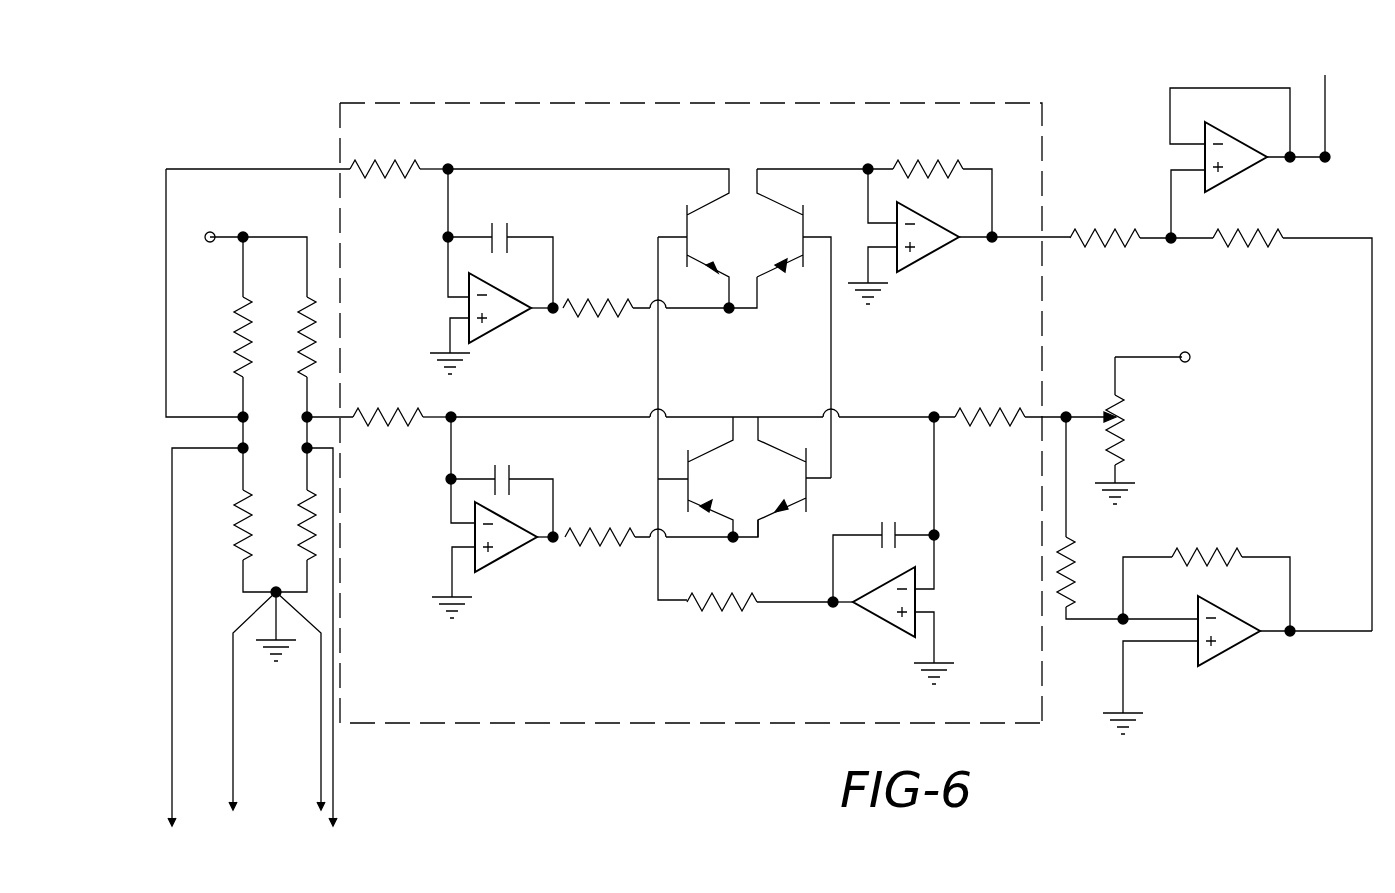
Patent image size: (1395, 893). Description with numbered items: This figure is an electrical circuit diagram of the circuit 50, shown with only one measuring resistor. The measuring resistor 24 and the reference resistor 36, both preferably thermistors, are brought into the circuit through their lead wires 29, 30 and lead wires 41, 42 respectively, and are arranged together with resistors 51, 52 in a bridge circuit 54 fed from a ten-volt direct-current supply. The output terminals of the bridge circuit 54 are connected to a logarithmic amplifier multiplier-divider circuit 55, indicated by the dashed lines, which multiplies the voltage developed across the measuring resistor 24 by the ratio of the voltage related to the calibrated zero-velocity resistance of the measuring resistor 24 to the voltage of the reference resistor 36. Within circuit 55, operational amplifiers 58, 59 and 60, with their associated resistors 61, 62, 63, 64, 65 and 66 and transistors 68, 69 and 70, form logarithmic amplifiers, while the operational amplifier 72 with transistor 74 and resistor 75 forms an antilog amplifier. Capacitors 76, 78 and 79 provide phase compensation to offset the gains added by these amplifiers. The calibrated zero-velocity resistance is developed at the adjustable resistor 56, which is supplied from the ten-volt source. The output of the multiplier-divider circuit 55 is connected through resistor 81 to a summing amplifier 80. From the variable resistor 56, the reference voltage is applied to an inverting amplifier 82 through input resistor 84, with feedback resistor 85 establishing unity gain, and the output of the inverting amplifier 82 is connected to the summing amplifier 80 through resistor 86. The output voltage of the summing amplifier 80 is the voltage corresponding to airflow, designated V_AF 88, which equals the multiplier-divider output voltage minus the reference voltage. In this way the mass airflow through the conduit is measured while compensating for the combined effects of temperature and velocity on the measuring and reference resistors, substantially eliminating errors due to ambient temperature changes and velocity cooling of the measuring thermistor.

The thermally sensitive electrical resistor 24 is at (232, 548).
The electrical lead wire 29 is at (172, 662).
The electrical lead wire 30 is at (234, 705).
The thermally sensitive electrical resistor 36 is at (320, 548).
The lead wire 41 is at (318, 740).
The lead wire 42 is at (334, 796).
The circuit 50 is at (732, 743).
The resistor 51 is at (252, 312).
The resistor 52 is at (316, 306).
The bridge circuit 54 is at (262, 595).
The logarithmic amplifier multiplier-divider circuit 55 is at (1044, 110).
The adjustable resistor 56 is at (1126, 440).
The operational amplifier 58 is at (495, 336).
The operational amplifier 59 is at (505, 562).
The operational amplifier 60 is at (868, 622).
The resistor 61 is at (398, 172).
The resistor 62 is at (373, 424).
The resistor 63 is at (592, 547).
The resistor 64 is at (592, 316).
The resistor 65 is at (706, 612).
The resistor 66 is at (996, 425).
The transistor 68 is at (686, 220).
The transistor 69 is at (703, 497).
The transistor 70 is at (800, 458).
The operational amplifier 72 is at (930, 262).
The transistor 74 is at (808, 222).
The resistor 75 is at (938, 174).
The capacitor 76 is at (512, 226).
The capacitor 78 is at (509, 490).
The capacitor 79 is at (872, 549).
The summing amplifier 80 is at (1228, 140).
The resistor 81 is at (1100, 246).
The inverting amplifier 82 is at (1240, 660).
The input resistor 84 is at (1062, 577).
The feedback resistor 85 is at (1234, 564).
The resistor 86 is at (1236, 246).
The output voltage V_AF 88 is at (1325, 90).